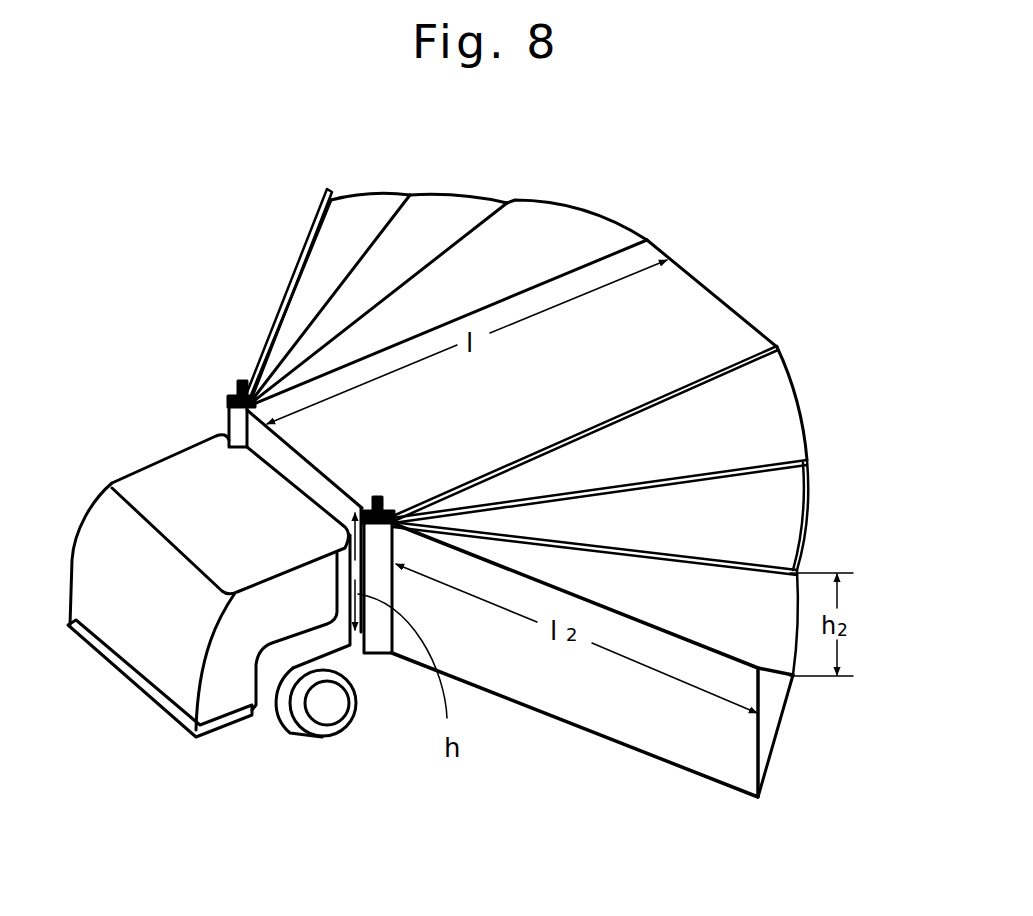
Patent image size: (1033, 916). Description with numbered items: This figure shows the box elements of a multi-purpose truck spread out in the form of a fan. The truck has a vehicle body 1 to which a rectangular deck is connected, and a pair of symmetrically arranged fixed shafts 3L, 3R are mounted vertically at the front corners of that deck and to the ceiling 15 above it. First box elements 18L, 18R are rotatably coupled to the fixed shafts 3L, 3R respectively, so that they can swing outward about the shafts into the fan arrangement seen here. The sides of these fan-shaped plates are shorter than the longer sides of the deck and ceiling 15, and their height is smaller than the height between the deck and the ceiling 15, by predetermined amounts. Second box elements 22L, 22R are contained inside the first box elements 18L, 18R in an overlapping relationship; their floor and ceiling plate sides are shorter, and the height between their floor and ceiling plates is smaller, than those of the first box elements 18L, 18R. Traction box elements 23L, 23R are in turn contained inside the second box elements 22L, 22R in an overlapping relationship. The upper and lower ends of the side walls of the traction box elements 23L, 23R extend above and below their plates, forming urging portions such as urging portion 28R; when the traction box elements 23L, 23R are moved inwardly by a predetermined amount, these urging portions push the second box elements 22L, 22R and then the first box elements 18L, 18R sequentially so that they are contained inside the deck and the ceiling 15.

The vehicle body 1 is at (155, 475).
The fixed shaft 3R is at (235, 390).
The fixed shaft 3L is at (385, 511).
The ceiling 15 is at (693, 287).
The first box element 18R is at (563, 223).
The first box element 18L is at (785, 405).
The second box element 22R is at (438, 202).
The second box element 22L is at (792, 510).
The traction box element 23R is at (360, 207).
The traction box element 23L is at (757, 638).
The urging portion 28R is at (318, 210).